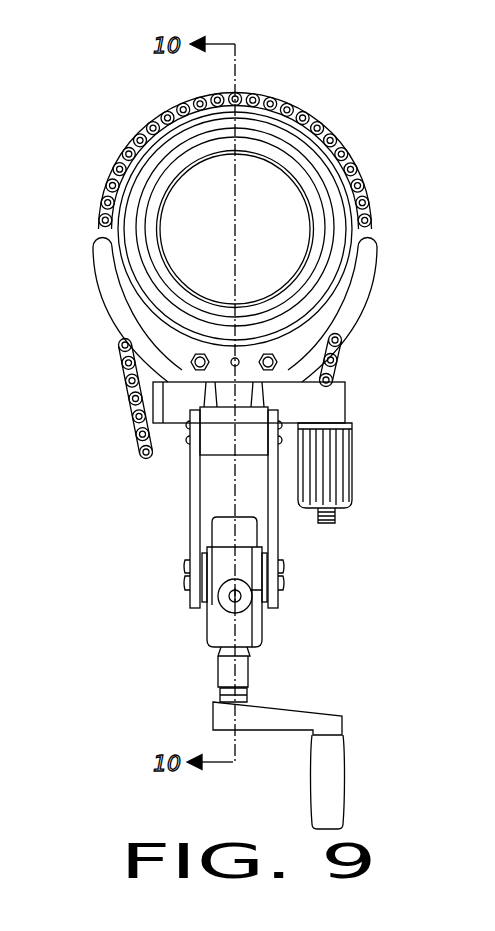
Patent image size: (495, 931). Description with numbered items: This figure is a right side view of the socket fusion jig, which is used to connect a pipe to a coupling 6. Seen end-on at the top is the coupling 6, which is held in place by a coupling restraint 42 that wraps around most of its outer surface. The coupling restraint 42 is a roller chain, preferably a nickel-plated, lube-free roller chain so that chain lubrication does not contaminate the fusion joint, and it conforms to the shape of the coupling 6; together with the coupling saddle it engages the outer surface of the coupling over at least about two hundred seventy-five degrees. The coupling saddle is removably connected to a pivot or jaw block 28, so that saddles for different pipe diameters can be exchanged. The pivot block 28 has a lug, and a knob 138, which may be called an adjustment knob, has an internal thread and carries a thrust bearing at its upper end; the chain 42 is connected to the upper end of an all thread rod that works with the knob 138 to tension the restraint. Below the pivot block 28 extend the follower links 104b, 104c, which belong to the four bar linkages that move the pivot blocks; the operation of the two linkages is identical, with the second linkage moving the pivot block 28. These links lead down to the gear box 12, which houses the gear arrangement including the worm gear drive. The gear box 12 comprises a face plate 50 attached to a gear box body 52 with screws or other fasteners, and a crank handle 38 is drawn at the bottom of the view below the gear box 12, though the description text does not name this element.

The coupling 6 is at (307, 135).
The coupling restraint 42 is at (127, 150).
The pivot block 28 is at (335, 404).
The knob 138 is at (352, 479).
The follower link 104b is at (190, 527).
The follower link 104c is at (278, 532).
The gear box 12 is at (218, 627).
The face plate 50 is at (255, 629).
The gear box body 52 is at (213, 646).
The crank handle 38 is at (343, 803).